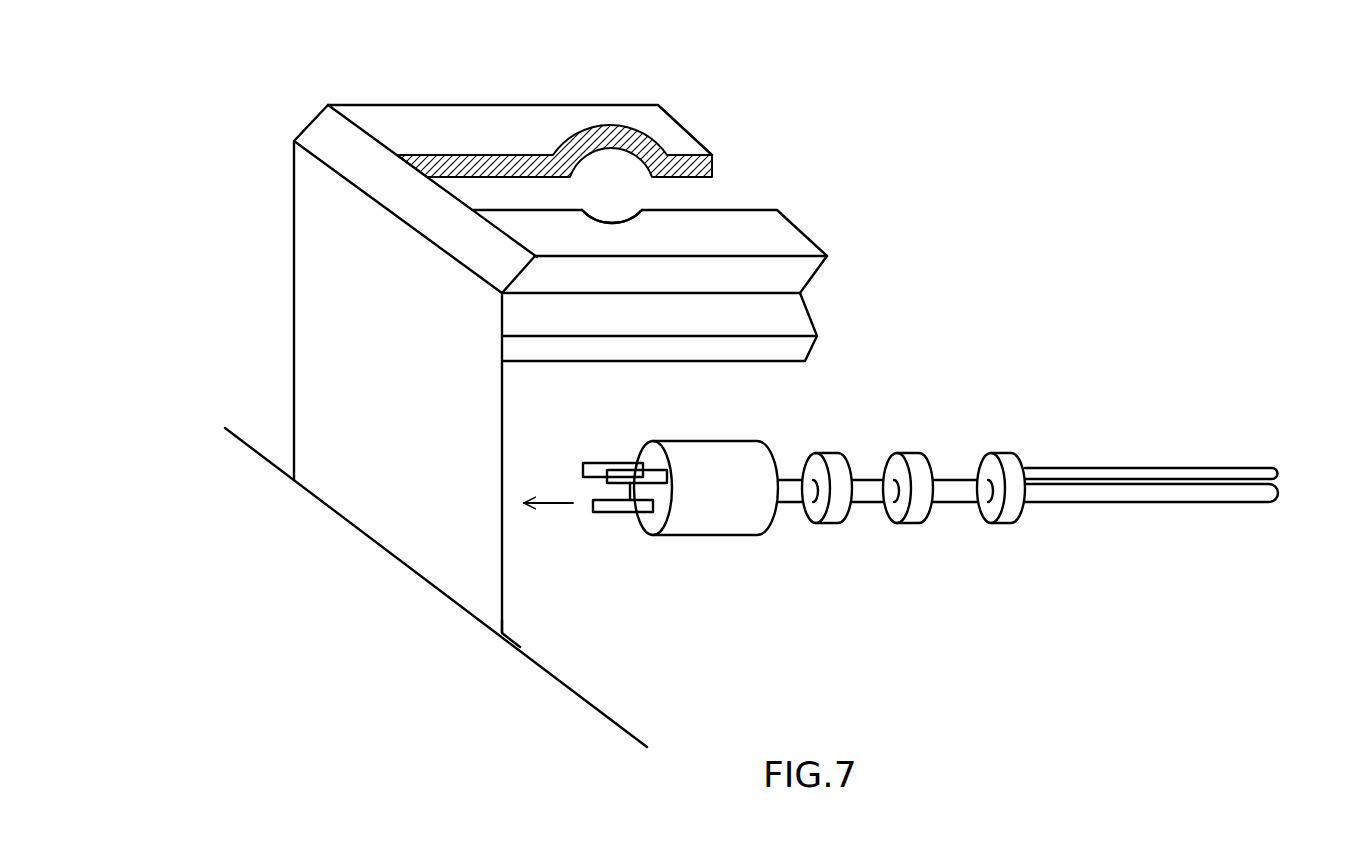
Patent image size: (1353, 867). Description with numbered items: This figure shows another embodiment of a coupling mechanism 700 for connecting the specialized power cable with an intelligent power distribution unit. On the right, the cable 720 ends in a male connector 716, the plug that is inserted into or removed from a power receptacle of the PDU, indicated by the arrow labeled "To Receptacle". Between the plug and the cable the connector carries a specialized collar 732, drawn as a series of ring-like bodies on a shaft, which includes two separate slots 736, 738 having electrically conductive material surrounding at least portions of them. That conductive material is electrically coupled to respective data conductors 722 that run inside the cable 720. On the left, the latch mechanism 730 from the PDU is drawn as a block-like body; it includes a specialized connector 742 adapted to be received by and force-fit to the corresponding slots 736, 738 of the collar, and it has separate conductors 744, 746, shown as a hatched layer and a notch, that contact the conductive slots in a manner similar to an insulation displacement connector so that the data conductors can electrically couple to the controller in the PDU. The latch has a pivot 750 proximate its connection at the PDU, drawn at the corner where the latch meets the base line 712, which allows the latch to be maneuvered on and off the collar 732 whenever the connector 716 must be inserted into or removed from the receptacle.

The coupling mechanism 700 is at (938, 247).
The floor surface 712 is at (365, 610).
The male connector 716 is at (725, 539).
The cable 720 is at (1127, 497).
The data conductors 722 is at (1148, 473).
The latch mechanism 730 is at (297, 260).
The collar 732 is at (925, 503).
The slot 736 is at (867, 463).
The slot 738 is at (957, 465).
The specialized connector 742 is at (618, 105).
The conductor 744 is at (705, 165).
The conductor 746 is at (627, 217).
The pivot 750 is at (504, 633).